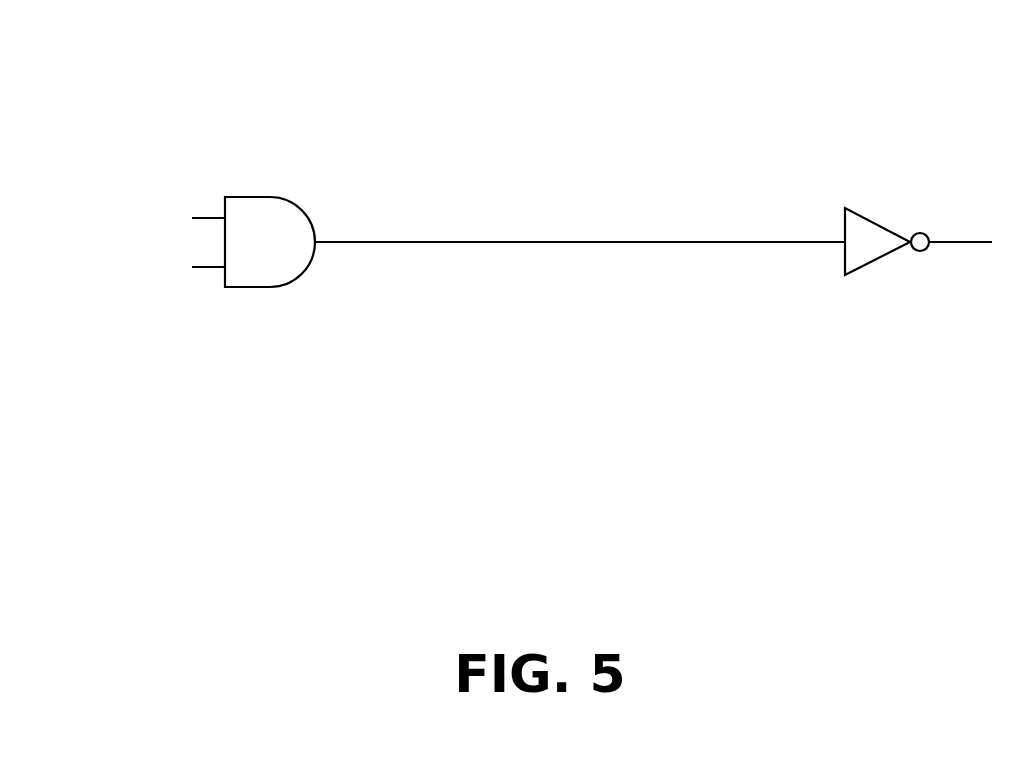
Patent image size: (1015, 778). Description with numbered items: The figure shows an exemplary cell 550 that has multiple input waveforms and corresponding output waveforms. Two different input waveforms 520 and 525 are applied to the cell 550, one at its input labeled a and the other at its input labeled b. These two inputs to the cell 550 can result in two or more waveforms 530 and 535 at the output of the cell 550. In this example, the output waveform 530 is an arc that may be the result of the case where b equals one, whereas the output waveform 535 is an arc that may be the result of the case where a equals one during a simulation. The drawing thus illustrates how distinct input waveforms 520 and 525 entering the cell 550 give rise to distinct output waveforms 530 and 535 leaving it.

The input waveform 520 is at (108, 213).
The input waveform 525 is at (147, 275).
The output waveform 530 is at (827, 220).
The output waveform 535 is at (753, 287).
The cell 550 is at (525, 388).